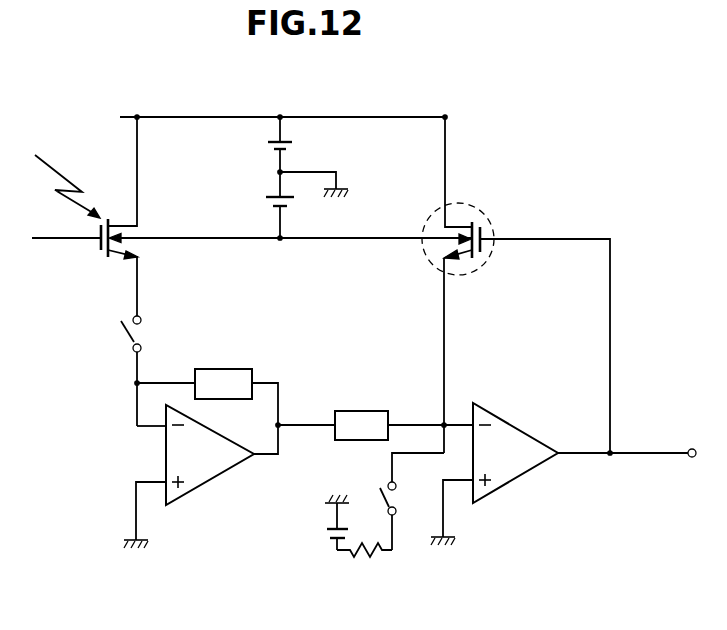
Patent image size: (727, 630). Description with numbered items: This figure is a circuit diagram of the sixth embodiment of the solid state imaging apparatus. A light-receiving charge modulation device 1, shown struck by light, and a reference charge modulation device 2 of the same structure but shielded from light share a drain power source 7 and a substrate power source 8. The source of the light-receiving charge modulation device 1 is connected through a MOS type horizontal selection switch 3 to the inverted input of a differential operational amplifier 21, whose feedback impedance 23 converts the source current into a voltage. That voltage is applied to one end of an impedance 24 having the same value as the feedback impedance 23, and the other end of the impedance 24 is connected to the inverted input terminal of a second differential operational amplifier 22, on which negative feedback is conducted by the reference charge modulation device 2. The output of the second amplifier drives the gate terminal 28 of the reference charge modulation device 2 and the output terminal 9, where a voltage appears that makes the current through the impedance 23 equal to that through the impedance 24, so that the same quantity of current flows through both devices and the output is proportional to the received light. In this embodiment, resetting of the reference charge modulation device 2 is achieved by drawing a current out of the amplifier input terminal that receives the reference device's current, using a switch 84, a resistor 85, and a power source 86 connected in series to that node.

The light-receiving charge modulation device 1 is at (103, 258).
The reference charge modulation device 2 is at (487, 262).
The horizontal selection switch 3 is at (124, 338).
The drain power source 7 is at (294, 146).
The substrate power source 8 is at (266, 200).
The output terminal 9 is at (691, 458).
The differential operational amplifier 21 is at (215, 480).
The differential operational amplifier 22 is at (520, 477).
The feedback impedance 23 is at (236, 368).
The impedance 24 is at (363, 410).
The gate terminal 28 is at (559, 237).
The switch 84 is at (395, 497).
The resistor 85 is at (368, 556).
The power source 86 is at (322, 531).